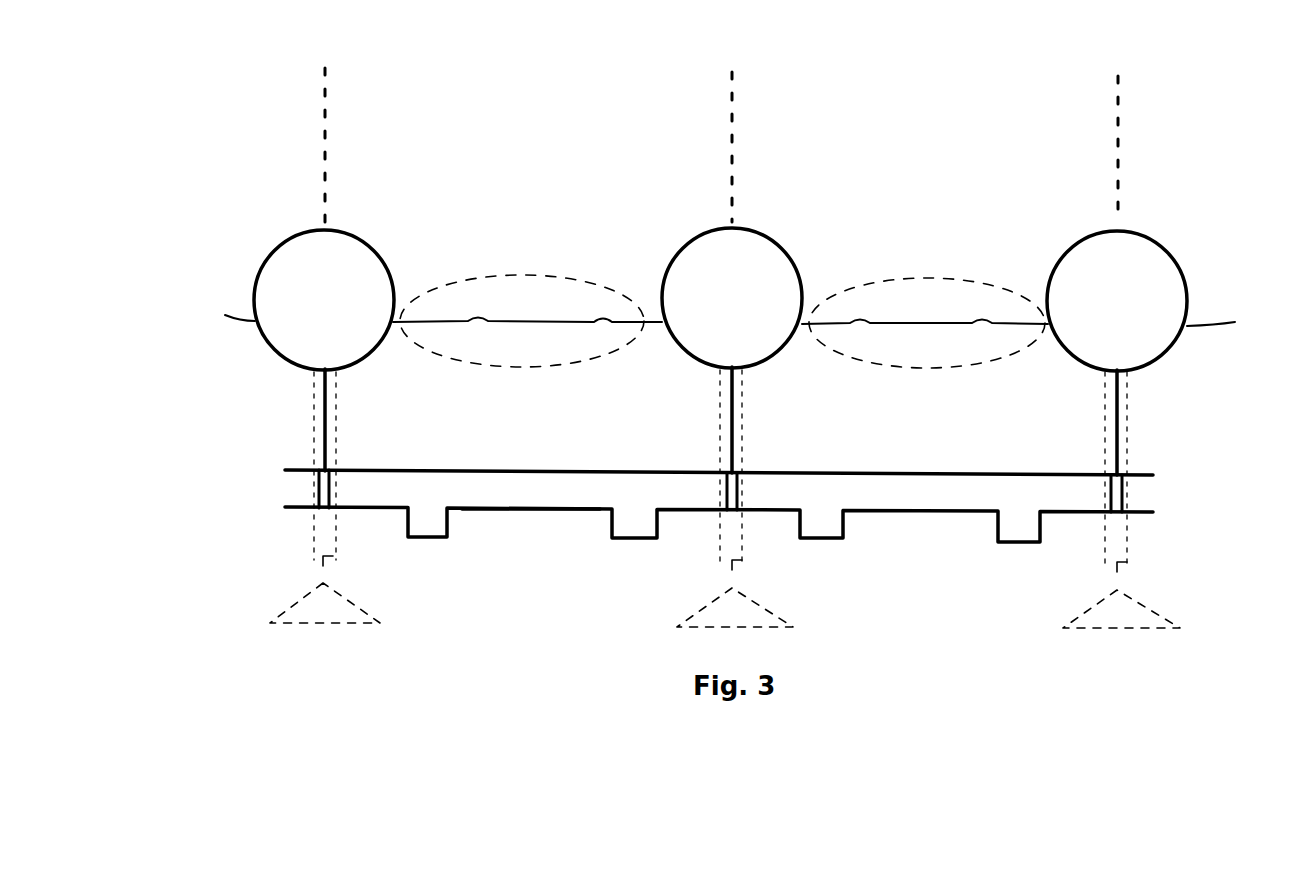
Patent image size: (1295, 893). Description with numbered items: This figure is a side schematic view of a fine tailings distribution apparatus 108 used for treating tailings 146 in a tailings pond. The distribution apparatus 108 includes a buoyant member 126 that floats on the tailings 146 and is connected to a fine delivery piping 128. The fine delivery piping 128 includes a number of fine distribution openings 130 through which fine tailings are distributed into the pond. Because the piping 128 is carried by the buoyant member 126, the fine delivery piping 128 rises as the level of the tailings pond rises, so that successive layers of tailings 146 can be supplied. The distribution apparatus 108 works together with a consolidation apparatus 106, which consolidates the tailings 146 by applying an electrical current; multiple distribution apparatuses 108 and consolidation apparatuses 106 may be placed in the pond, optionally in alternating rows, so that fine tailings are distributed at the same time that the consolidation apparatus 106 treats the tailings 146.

The consolidation apparatus 106 is at (1127, 542).
The fine tailings distribution apparatus 108 is at (242, 437).
The buoyant member 126 is at (770, 357).
The fine delivery piping 128 is at (638, 472).
The fine distribution openings 130 is at (427, 536).
The tailings 146 is at (507, 590).